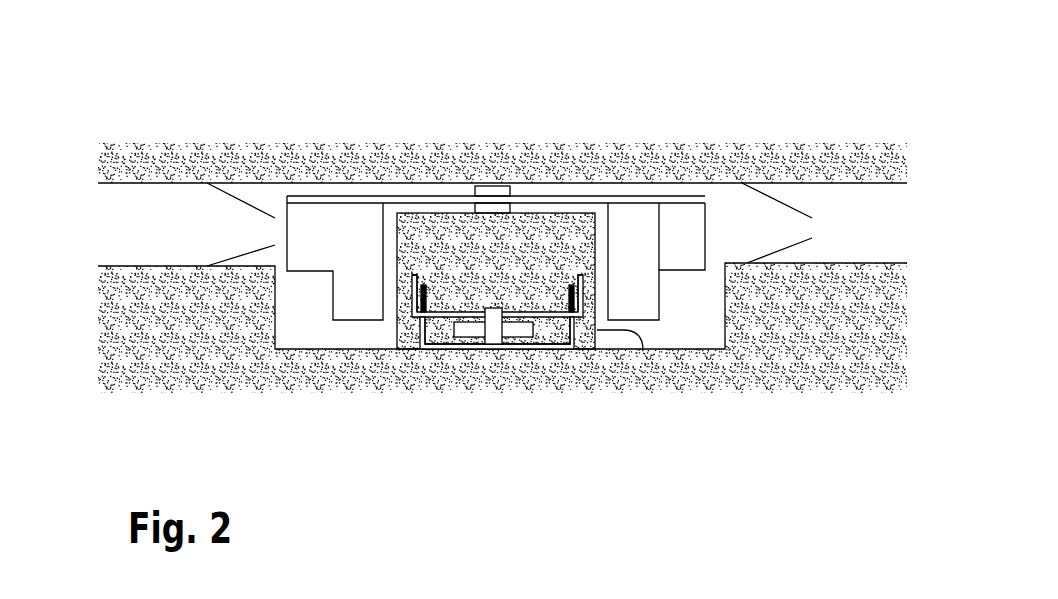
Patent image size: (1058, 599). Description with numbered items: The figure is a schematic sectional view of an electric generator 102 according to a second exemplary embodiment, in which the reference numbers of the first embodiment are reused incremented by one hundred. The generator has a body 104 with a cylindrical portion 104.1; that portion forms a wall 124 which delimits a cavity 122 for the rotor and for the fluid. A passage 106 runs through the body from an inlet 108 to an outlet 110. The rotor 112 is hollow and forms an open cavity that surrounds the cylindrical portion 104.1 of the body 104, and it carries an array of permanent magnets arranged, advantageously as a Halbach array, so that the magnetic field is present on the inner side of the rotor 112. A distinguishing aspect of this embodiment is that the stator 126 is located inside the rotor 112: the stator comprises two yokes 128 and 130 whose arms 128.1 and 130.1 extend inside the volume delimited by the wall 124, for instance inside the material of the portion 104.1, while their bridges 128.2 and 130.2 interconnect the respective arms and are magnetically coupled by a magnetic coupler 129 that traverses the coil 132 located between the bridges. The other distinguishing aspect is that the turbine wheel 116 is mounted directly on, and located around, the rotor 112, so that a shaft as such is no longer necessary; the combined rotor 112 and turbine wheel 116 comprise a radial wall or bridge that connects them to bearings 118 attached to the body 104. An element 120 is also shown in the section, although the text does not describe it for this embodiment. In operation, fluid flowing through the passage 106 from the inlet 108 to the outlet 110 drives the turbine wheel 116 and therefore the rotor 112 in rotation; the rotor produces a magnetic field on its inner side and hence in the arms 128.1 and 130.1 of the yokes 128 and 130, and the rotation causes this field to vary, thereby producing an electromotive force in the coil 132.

The electric generator 102 is at (157, 102).
The body 104 is at (212, 340).
The cylindrical portion 104.1 is at (427, 237).
The passage 106 is at (267, 198).
The inlet 108 is at (157, 227).
The outlet 110 is at (858, 227).
The rotor 112 is at (660, 296).
The turbine wheel 116 is at (692, 248).
The bearings 118 is at (533, 196).
The flow channel 120 is at (242, 201).
The cavity 122 is at (323, 341).
The wall 124 is at (643, 350).
The stator 126 is at (601, 487).
The yoke 128 is at (537, 361).
The arms 128.1 is at (416, 276).
The bridge 128.2 is at (562, 349).
The magnetic coupler 129 is at (492, 328).
The yoke 130 is at (450, 347).
The arms 130.1 is at (411, 278).
The bridge 130.2 is at (436, 318).
The coil 132 is at (470, 328).